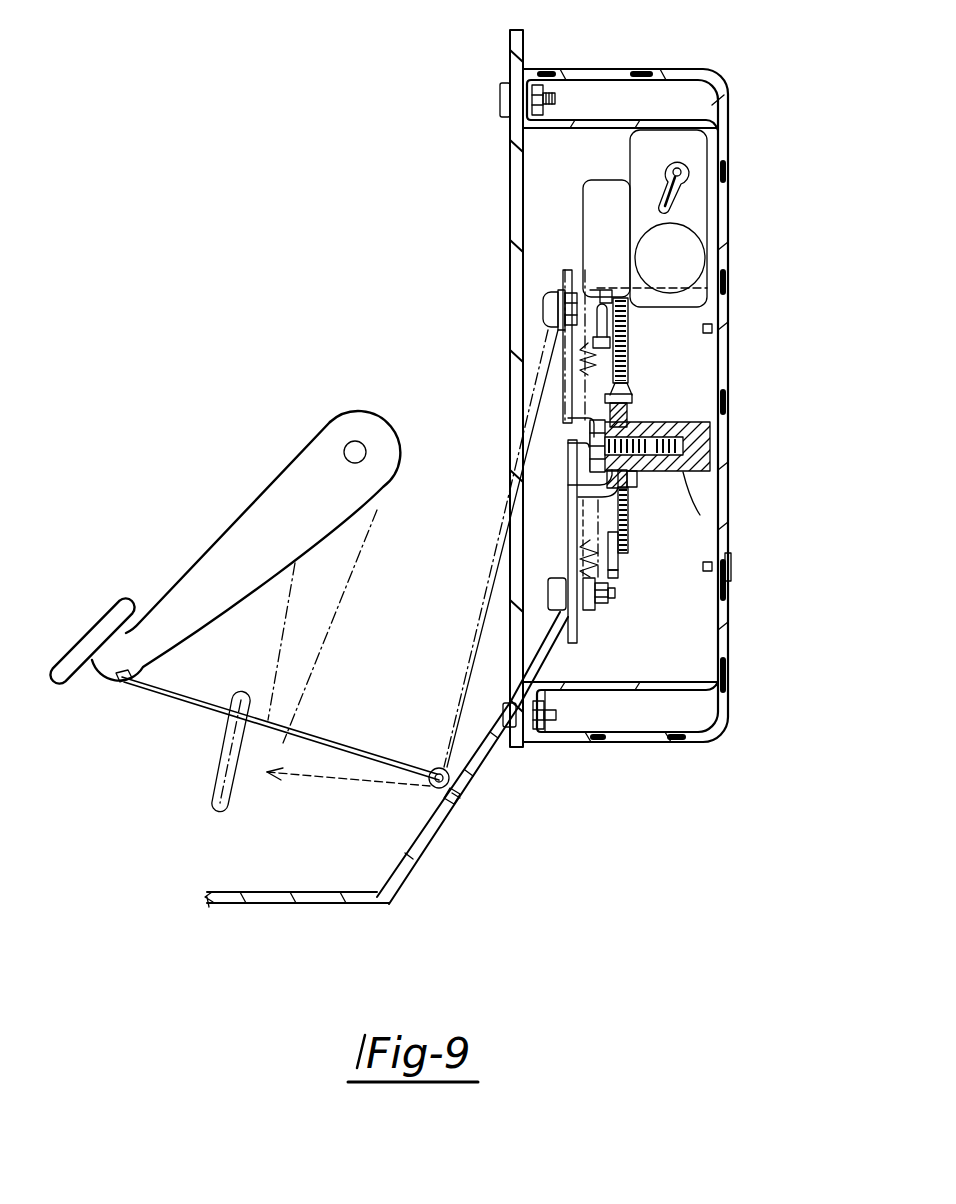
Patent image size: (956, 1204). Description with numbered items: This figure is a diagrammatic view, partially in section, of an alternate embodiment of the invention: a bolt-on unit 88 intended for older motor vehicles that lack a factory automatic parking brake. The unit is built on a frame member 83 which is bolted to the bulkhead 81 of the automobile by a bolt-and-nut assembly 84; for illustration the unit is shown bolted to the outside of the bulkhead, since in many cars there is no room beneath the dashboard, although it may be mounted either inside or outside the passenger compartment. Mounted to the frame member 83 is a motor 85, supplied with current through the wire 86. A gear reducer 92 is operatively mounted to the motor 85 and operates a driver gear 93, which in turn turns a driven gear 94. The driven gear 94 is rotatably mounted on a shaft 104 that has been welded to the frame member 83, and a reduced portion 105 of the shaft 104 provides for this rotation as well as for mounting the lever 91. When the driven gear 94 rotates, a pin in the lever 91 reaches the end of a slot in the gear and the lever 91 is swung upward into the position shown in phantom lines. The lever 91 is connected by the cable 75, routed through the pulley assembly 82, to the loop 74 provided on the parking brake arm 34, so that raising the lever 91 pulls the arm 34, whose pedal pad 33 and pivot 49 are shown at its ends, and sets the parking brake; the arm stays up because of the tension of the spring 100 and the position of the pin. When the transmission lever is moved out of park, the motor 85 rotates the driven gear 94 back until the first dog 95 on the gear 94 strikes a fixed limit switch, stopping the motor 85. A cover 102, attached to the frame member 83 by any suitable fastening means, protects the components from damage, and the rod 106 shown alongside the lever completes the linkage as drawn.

The pedal pad 33 is at (85, 630).
The parking brake arm 34 is at (214, 543).
The pivot 49 is at (355, 445).
The loop 74 is at (124, 690).
The cable 75 is at (188, 706).
The bulkhead 81 is at (275, 900).
The pulley assembly 82 is at (435, 805).
The frame member 83 is at (640, 692).
The bolt-and-nut assembly 84 is at (498, 100).
The motor 85 is at (637, 156).
The wire 86 is at (660, 185).
The bolt-on unit 88 is at (636, 70).
The lever 91 is at (565, 532).
The gear reducer 92 is at (628, 200).
The driver gear 93 is at (628, 337).
The driven gear 94 is at (631, 560).
The first dog 95 is at (692, 455).
The spring 100 is at (586, 356).
The cover 102 is at (734, 703).
The shaft 104 is at (688, 472).
The reduced portion 105 is at (645, 475).
The rod 106 is at (602, 418).